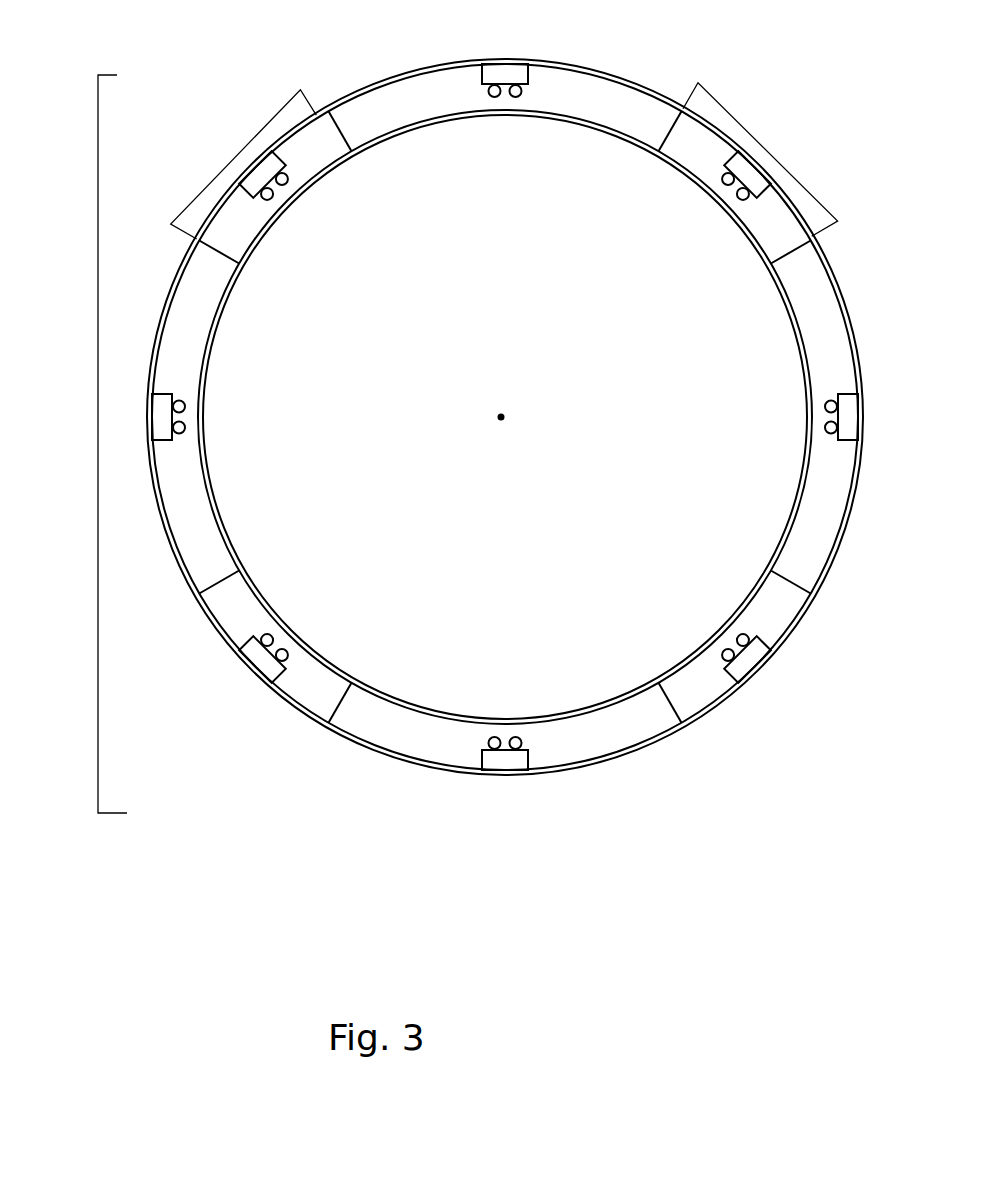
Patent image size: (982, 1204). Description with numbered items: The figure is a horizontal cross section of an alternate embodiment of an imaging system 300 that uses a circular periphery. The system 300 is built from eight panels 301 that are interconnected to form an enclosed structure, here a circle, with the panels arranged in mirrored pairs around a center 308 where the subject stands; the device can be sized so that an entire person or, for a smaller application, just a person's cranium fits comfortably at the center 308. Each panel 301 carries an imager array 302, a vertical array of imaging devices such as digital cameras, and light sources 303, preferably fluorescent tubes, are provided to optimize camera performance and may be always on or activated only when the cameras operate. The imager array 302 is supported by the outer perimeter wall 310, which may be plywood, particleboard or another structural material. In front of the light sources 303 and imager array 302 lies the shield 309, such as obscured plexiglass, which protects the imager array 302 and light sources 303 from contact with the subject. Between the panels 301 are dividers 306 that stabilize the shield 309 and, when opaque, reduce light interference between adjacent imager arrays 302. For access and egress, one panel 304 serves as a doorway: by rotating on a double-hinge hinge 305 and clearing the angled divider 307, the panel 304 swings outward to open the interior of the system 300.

The imaging system 300 is at (98, 445).
The panel 301 is at (244, 164).
The imager array 302 is at (274, 166).
The light sources 303 is at (291, 199).
The doorway panel 304 is at (760, 160).
The double-hinge hinge 305 is at (681, 108).
The dividers 306 is at (261, 280).
The angled divider 307 is at (775, 253).
The center 308 is at (511, 424).
The shield 309 is at (397, 702).
The perimeter wall 310 is at (350, 95).